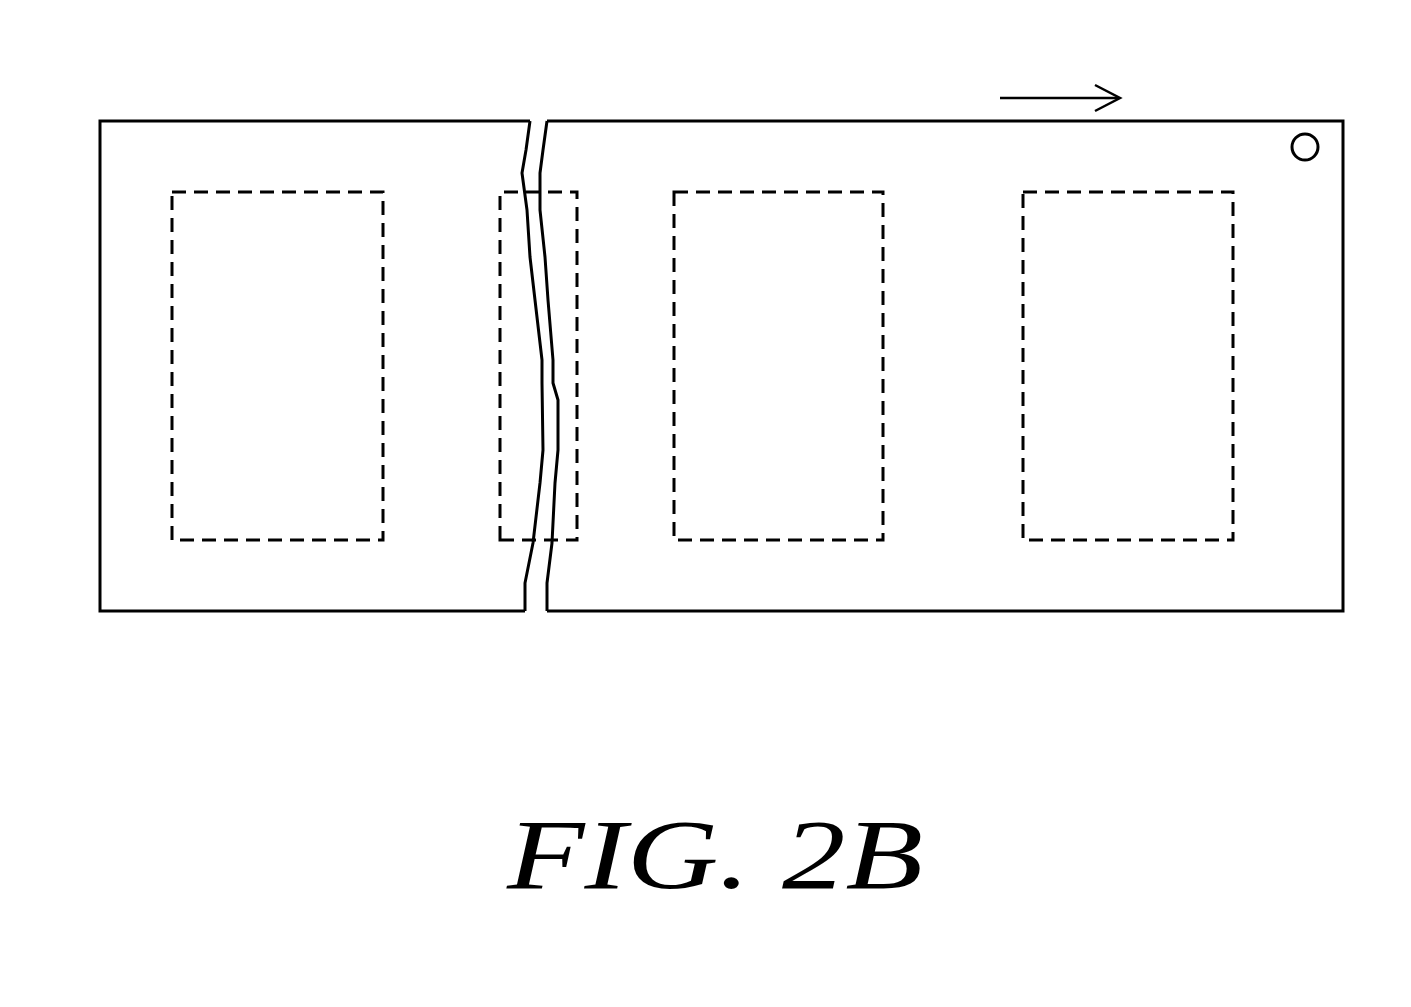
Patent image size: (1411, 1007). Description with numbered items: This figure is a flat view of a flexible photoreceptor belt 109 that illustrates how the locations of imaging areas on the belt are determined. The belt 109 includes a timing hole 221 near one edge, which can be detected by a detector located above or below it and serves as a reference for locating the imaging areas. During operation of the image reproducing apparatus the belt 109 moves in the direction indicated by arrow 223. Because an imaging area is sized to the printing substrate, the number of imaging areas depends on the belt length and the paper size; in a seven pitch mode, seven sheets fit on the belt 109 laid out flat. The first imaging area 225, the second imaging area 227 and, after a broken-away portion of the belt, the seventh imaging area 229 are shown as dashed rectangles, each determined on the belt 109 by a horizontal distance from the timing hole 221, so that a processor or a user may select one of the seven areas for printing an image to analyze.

The photoreceptor belt 109 is at (913, 611).
The timing hole 221 is at (1308, 140).
The arrow 223 is at (1024, 98).
The first imaging area 225 is at (1097, 540).
The second imaging area 227 is at (742, 540).
The seventh imaging area 229 is at (267, 540).